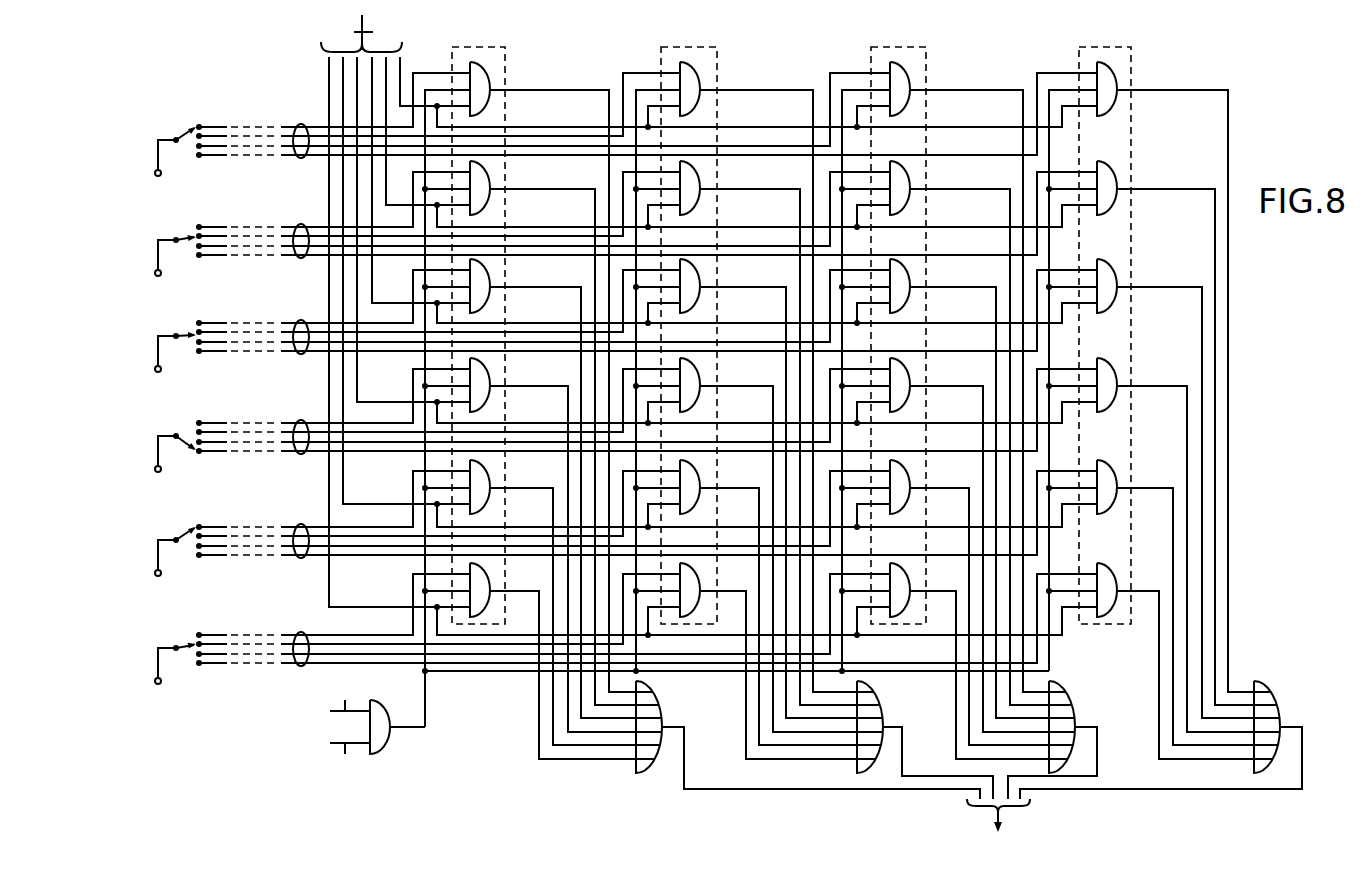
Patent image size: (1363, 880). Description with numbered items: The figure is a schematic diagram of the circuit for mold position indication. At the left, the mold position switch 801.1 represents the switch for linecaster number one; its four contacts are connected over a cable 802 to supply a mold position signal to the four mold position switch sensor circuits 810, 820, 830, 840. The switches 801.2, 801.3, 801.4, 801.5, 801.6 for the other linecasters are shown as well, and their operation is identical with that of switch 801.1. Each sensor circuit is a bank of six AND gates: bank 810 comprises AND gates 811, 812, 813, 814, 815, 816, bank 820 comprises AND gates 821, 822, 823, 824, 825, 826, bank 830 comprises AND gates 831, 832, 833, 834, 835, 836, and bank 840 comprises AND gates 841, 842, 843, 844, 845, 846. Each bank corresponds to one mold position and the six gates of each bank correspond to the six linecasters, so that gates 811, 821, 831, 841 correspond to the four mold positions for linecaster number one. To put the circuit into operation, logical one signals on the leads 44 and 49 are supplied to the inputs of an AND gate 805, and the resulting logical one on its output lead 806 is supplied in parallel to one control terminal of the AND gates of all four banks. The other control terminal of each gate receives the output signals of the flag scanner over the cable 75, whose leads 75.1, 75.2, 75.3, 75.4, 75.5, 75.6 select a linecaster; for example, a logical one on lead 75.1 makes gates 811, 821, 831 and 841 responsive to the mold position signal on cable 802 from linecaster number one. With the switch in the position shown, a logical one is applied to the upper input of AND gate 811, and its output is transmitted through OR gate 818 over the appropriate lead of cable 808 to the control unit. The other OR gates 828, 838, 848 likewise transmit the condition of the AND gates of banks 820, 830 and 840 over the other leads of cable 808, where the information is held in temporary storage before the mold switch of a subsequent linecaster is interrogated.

The cable 75 is at (394, 33).
The lead of cable 75 75.1 is at (401, 63).
The lead of cable 75 75.2 is at (386, 164).
The lead of cable 75 75.3 is at (372, 267).
The lead of cable 75 75.4 is at (357, 366).
The lead of cable 75 75.5 is at (343, 472).
The lead of cable 75 75.6 is at (329, 581).
The mold position switch 801.1 is at (187, 136).
The mold position switch 801.2 is at (187, 236).
The mold position switch 801.3 is at (187, 332).
The mold position switch 801.4 is at (185, 432).
The mold position switch 801.5 is at (184, 536).
The mold position switch 801.6 is at (187, 644).
The cable 802 is at (303, 124).
The AND gate 805 is at (382, 745).
The output lead 806 is at (428, 694).
The cable 808 is at (995, 821).
The lead 44 is at (343, 696).
The lead 49 is at (343, 758).
The mold position switch sensor circuit 810 is at (505, 47).
The AND gate 811 is at (487, 82).
The AND gate 812 is at (487, 181).
The AND gate 813 is at (487, 279).
The AND gate 814 is at (487, 378).
The AND gate 815 is at (487, 480).
The AND gate 816 is at (487, 583).
The OR gate 818 is at (650, 700).
The mold position switch sensor circuit 820 is at (717, 47).
The AND gate 821 is at (697, 82).
The AND gate 822 is at (697, 181).
The AND gate 823 is at (697, 279).
The AND gate 824 is at (697, 378).
The AND gate 825 is at (697, 480).
The AND gate 826 is at (697, 583).
The OR gate 828 is at (868, 701).
The mold position switch sensor circuit 830 is at (926, 47).
The AND gate 831 is at (907, 82).
The AND gate 832 is at (907, 181).
The AND gate 833 is at (907, 279).
The AND gate 834 is at (907, 378).
The AND gate 835 is at (907, 480).
The AND gate 836 is at (907, 583).
The OR gate 838 is at (1060, 698).
The mold position switch sensor circuit 840 is at (1131, 52).
The AND gate 841 is at (1114, 82).
The AND gate 842 is at (1114, 181).
The AND gate 843 is at (1114, 279).
The AND gate 844 is at (1114, 378).
The AND gate 845 is at (1114, 480).
The AND gate 846 is at (1114, 583).
The OR gate 848 is at (1267, 698).